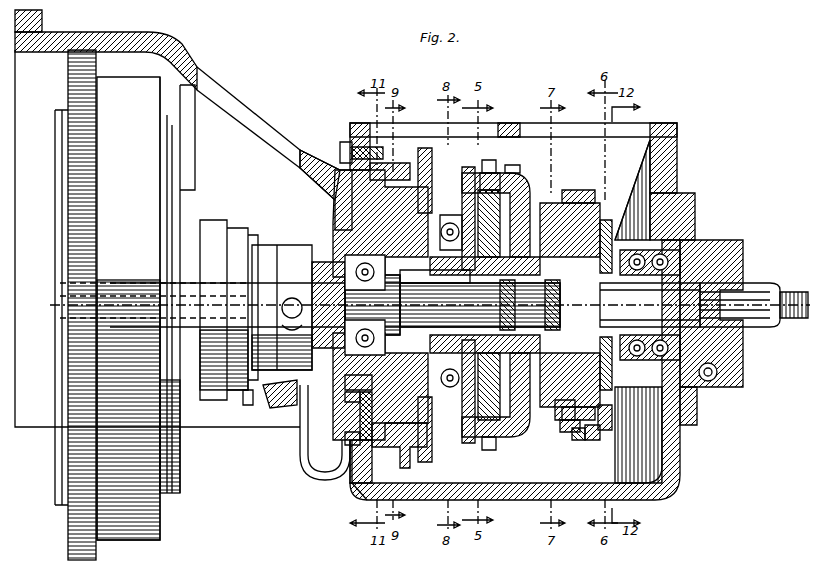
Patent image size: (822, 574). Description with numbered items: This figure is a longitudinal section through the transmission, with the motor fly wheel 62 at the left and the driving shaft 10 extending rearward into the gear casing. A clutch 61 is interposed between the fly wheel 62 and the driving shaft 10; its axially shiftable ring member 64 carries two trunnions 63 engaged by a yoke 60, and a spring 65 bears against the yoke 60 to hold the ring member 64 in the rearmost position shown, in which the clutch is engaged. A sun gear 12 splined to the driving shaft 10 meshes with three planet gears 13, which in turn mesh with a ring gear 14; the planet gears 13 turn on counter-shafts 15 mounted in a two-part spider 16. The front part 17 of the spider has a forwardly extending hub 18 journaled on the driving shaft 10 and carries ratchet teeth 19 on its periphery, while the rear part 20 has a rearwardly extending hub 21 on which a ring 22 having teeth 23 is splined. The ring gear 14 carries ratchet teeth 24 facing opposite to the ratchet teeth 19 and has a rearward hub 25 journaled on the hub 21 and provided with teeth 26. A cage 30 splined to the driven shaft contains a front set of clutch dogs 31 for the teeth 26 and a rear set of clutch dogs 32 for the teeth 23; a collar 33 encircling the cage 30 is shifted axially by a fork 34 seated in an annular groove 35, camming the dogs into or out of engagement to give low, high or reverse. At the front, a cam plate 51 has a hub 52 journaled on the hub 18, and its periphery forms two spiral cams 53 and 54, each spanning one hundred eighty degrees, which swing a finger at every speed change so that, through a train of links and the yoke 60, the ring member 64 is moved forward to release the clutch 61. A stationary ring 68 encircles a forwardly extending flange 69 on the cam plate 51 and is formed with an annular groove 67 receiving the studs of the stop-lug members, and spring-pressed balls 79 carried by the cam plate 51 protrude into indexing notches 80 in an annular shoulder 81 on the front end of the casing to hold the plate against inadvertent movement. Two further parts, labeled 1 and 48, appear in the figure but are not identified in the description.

The output shaft bearing housing 1 is at (700, 262).
The driving shaft 10 is at (330, 262).
The sun gear 12 is at (485, 305).
The planet gears 13 is at (525, 180).
The ring gear 14 is at (495, 173).
The counter-shafts 15 is at (556, 215).
The spider 16 is at (452, 215).
The front part of the spider 17 is at (462, 196).
The forwardly extending hub 18 is at (435, 281).
The ratchet teeth 19 is at (472, 173).
The rear part of the spider 20 is at (570, 190).
The rearwardly extending hub 21 is at (510, 305).
The ring 22 is at (620, 283).
The teeth 23 is at (632, 190).
The ratchet teeth 24 is at (512, 166).
The hub 25 is at (541, 305).
The teeth 26 is at (695, 300).
The cage 30 is at (565, 428).
The front set of clutch dogs 31 is at (560, 412).
The rear set of clutch dogs 32 is at (604, 422).
The collar 33 is at (638, 435).
The fork 34 is at (575, 432).
The annular groove 35 is at (590, 432).
The shaft sleeve 48 is at (480, 305).
The cam plate 51 is at (340, 200).
The hub 52 is at (398, 262).
The cam 53 is at (425, 148).
The cam 54 is at (418, 500).
The yoke 60 is at (268, 392).
The clutch 61 is at (216, 228).
The fly wheel 62 is at (68, 155).
The trunnions 63 is at (292, 308).
The ring member 64 is at (278, 245).
The spring 65 is at (300, 447).
The annular groove 67 is at (352, 480).
The stationary ring 68 is at (345, 436).
The flange 69 is at (392, 440).
The spring-pressed balls 79 is at (360, 405).
The indexing notches 80 is at (345, 400).
The annular shoulder 81 is at (345, 384).